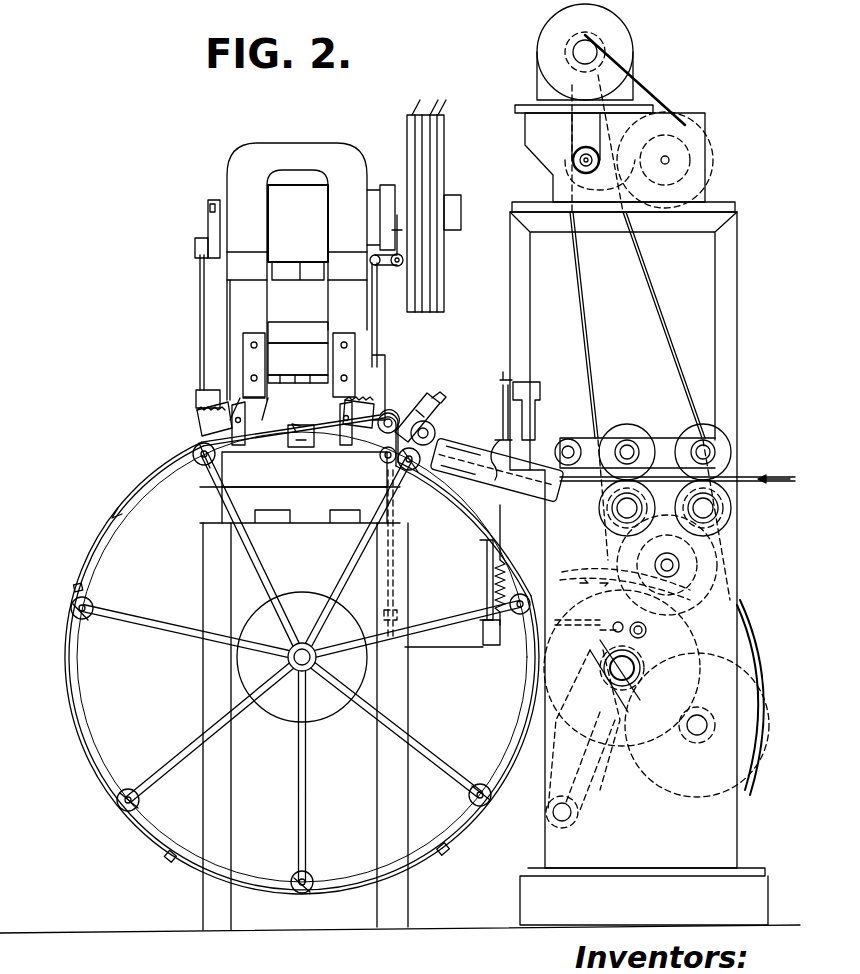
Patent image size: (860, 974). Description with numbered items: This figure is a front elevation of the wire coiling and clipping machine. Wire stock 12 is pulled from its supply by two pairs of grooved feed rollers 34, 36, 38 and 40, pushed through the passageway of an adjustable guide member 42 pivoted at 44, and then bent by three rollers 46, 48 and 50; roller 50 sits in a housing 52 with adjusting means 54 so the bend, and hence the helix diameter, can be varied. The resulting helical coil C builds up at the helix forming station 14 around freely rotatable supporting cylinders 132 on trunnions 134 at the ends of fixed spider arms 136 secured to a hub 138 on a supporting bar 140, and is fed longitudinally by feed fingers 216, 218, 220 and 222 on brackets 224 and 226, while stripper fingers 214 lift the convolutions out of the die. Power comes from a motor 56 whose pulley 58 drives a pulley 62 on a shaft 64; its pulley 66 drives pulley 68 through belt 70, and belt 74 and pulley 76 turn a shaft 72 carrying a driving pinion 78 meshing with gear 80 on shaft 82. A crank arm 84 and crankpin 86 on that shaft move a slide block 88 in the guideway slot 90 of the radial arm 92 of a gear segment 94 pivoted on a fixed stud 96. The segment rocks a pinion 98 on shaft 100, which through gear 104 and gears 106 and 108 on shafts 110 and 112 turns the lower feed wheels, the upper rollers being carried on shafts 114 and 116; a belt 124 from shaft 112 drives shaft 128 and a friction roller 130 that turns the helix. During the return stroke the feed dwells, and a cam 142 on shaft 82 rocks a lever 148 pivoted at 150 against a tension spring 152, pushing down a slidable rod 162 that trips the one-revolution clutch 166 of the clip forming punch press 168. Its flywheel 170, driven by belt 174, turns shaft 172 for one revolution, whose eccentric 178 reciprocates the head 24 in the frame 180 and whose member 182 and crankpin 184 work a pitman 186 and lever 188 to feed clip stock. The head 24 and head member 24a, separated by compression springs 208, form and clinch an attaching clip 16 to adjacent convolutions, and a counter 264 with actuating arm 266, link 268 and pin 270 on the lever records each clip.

The rod or wire stock 12 is at (677, 466).
The helix forming station 14 is at (190, 498).
The attaching clip 16 is at (72, 590).
The vertically reciprocating head 24 is at (298, 359).
The head member 24a is at (298, 394).
The grooved feed roller 34 is at (700, 425).
The grooved feed roller 36 is at (730, 508).
The grooved feed roller 38 is at (640, 425).
The grooved feed roller 40 is at (620, 512).
The adjustable guide member 42 is at (566, 440).
The pivot 44 is at (540, 440).
The forming roller 46 is at (435, 429).
The forming roller 48 is at (380, 460).
The forming roller 50 is at (395, 412).
The housing 52 is at (430, 385).
The adjusting means 54 is at (440, 392).
The motor 56 is at (630, 52).
The pulley 58 is at (588, 59).
The pulley 62 is at (685, 125).
The shaft 64 is at (670, 160).
The pulley 66 is at (700, 172).
The pulley 68 is at (580, 148).
The belt 70 is at (600, 153).
The shaft 72 is at (700, 732).
The belt 74 is at (655, 292).
The pulley 76 is at (752, 760).
The driving pinion 78 is at (685, 735).
The gear 80 is at (690, 676).
The shaft 82 is at (636, 670).
The crank arm 84 is at (643, 635).
The crankpin 86 is at (592, 600).
The slide block 88 is at (668, 565).
The guideway slot 90 is at (590, 742).
The radial arm 92 is at (600, 790).
The gear segment 94 is at (740, 612).
The fixed stud 96 is at (572, 820).
The pinion 98 is at (705, 555).
The shaft 100 is at (655, 565).
The gear 104 is at (400, 265).
The gear 106 is at (725, 478).
The gear 108 is at (600, 505).
The shaft 110 is at (710, 508).
The shaft 112 is at (612, 508).
The shaft 114 is at (710, 450).
The shaft 116 is at (625, 440).
The belt 124 is at (470, 490).
The shaft 128 is at (430, 470).
The roller 130 is at (433, 524).
The supporting cylinder 132 is at (195, 455).
The trunnion 134 is at (200, 465).
The spider arm 136 is at (190, 636).
The hub 138 is at (298, 668).
The supporting bar 140 is at (330, 710).
The cam 142 is at (600, 660).
The lever 148 is at (522, 616).
The pivot 150 is at (530, 625).
The tension spring 152 is at (497, 580).
The vertically slidable rod 162 is at (378, 350).
The one-revolution clutch 166 is at (390, 185).
The clip forming punch press 168 is at (318, 137).
The flywheel 170 is at (445, 130).
The shaft 172 is at (455, 197).
The belt 174 is at (425, 116).
The cam or eccentric 178 is at (298, 232).
The frame 180 is at (245, 312).
The member 182 is at (208, 222).
The crankpin 184 is at (196, 244).
The pitman 186 is at (200, 282).
The lever 188 is at (196, 400).
The compression spring 208 is at (243, 373).
The stripper finger 214 is at (318, 445).
The feed finger 216 is at (318, 440).
The feed finger 218 is at (340, 430).
The feed finger 220 is at (262, 425).
The feed finger 222 is at (240, 435).
The bracket 224 is at (348, 333).
The bracket 226 is at (243, 345).
The counter 264 is at (535, 382).
The actuating arm 266 is at (503, 380).
The link 268 is at (498, 440).
The pin 270 is at (490, 645).
The helical coil C is at (92, 535).